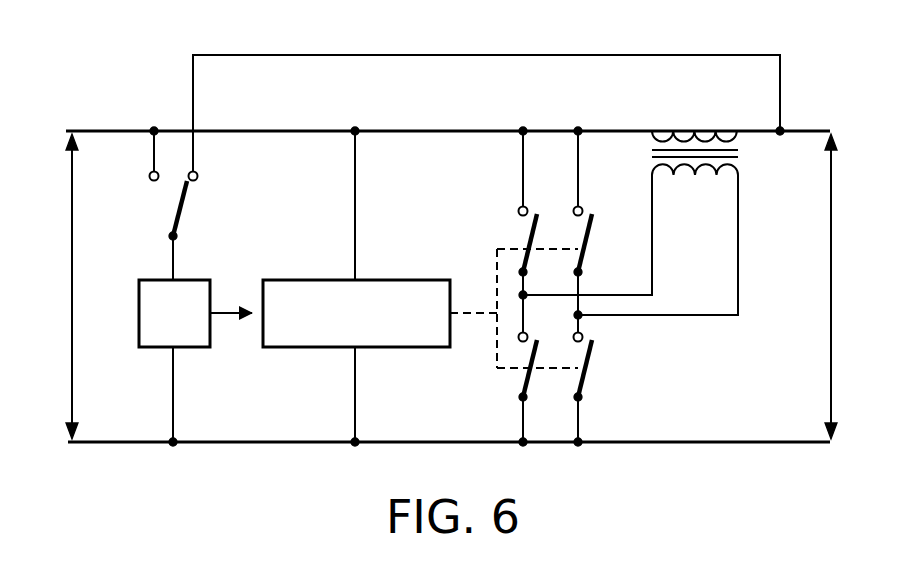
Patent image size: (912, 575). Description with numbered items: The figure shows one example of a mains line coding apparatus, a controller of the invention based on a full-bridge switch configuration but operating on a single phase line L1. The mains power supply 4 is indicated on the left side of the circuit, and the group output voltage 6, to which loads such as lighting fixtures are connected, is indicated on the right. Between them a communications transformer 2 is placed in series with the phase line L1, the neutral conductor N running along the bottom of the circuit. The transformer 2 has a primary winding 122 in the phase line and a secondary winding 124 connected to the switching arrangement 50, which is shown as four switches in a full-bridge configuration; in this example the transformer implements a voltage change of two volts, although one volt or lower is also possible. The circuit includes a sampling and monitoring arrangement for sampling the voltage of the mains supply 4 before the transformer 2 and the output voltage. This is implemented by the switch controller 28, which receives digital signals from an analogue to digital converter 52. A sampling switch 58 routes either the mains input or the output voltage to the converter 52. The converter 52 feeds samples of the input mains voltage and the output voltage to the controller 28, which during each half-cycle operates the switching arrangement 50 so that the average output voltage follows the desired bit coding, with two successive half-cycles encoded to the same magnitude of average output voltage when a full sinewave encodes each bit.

The communications transformer 2 is at (686, 172).
The mains power supply 4 is at (72, 284).
The group output voltage 6 is at (833, 284).
The switch controller 28 is at (298, 280).
The switching arrangement 50 is at (622, 351).
The analogue to digital converter 52 is at (145, 347).
The switch 58 is at (158, 196).
The primary winding 122 is at (662, 116).
The secondary winding 124 is at (697, 189).
The phase line L1 is at (433, 133).
The neutral conductor N is at (755, 440).